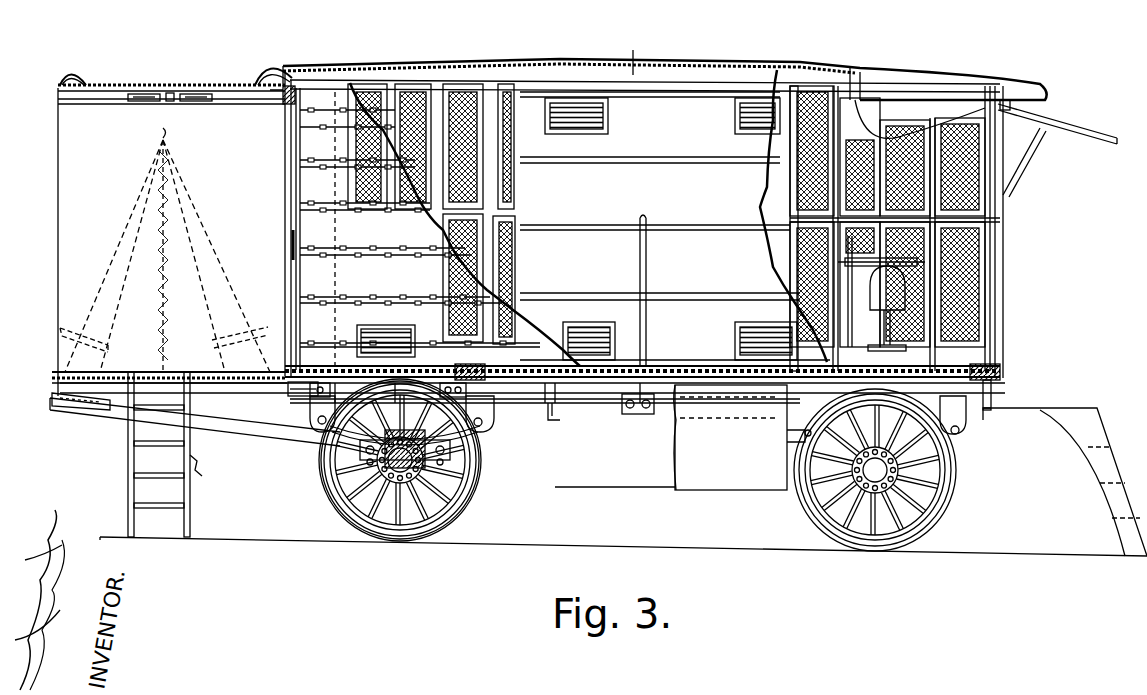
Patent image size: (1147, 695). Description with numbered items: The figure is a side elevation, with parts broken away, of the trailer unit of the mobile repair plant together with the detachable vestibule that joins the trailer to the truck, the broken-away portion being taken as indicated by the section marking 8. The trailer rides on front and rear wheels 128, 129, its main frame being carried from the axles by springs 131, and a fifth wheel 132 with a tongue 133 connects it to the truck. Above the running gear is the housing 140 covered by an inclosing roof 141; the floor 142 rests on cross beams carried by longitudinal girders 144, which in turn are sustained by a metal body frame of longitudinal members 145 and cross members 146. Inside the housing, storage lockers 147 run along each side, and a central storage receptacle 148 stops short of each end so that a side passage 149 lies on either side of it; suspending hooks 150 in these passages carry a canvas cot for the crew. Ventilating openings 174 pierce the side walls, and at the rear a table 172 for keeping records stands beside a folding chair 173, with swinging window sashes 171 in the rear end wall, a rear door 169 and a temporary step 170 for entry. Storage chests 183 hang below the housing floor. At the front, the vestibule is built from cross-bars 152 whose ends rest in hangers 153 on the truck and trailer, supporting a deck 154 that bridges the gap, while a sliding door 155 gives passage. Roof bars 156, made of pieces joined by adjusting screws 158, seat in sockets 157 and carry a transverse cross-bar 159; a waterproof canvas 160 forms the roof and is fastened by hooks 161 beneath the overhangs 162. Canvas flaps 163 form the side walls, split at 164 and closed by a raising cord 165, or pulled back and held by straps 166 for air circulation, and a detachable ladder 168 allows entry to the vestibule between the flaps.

The section line 8 is at (640, 52).
The front wheels 128 is at (455, 506).
The rear wheels 129 is at (956, 507).
The springs 131 is at (475, 463).
The fifth wheel 132 is at (320, 486).
The tongue 133 is at (275, 443).
The housing 140 is at (688, 118).
The roof 141 is at (436, 66).
The floor 142 is at (960, 366).
The longitudinal girders 144 is at (671, 437).
The longitudinal members 145 is at (588, 405).
The cross members 146 is at (432, 400).
The side storage lockers 147 is at (505, 328).
The central storage receptacle 148 is at (468, 84).
The side passage 149 is at (996, 333).
The suspending hooks 150 is at (430, 236).
The cross-bars 152 is at (98, 408).
The hangers 153 is at (300, 383).
The deck 154 is at (114, 376).
The sliding door 155 is at (285, 192).
The roof bars 156 is at (218, 98).
The sockets 157 is at (283, 104).
The adjusting screws 158 is at (150, 101).
The cross-bar 159 is at (170, 92).
The canvas 160 is at (108, 88).
The hooks 161 is at (287, 68).
The overhangs 162 is at (70, 70).
The canvas flaps 163 is at (98, 180).
The split 164 is at (178, 240).
The raising cord 165 is at (185, 277).
The straps 166 is at (90, 336).
The detachable ladder 168 is at (204, 478).
The rear door 169 is at (1000, 313).
The temporary step 170 is at (1083, 430).
The swinging window sashes 171 is at (1076, 138).
The table 172 is at (795, 246).
The folding chair 173 is at (812, 302).
The ventilating openings 174 is at (595, 134).
The storage chests 183 is at (690, 492).